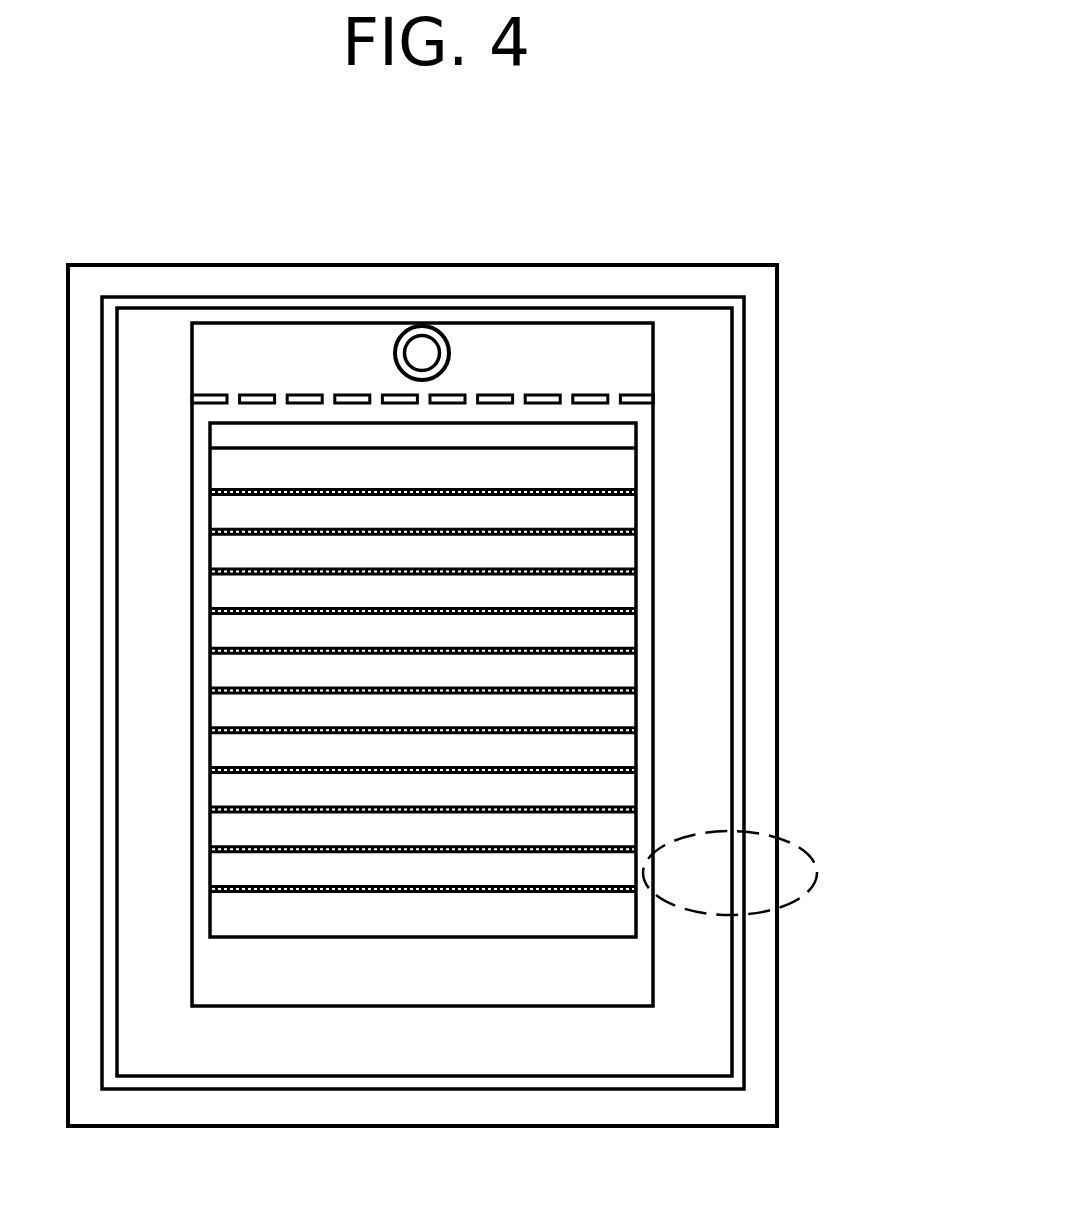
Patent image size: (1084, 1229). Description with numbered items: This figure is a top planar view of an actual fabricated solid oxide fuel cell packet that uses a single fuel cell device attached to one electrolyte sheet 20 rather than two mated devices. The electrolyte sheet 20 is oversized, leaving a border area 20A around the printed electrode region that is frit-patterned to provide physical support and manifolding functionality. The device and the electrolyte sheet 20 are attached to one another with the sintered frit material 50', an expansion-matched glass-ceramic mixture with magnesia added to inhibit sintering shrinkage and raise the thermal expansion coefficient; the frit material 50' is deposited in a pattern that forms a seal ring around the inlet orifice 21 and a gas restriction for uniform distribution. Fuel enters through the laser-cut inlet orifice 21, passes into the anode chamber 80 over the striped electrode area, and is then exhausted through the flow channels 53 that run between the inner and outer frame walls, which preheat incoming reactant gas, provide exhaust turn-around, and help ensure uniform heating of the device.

The electrolyte sheet 20 is at (763, 330).
The border area 20A is at (817, 873).
The inlet orifice 21 is at (421, 345).
The frit material 50' is at (422, 295).
The flow channels 53 is at (152, 395).
The anode chamber 80 is at (600, 975).